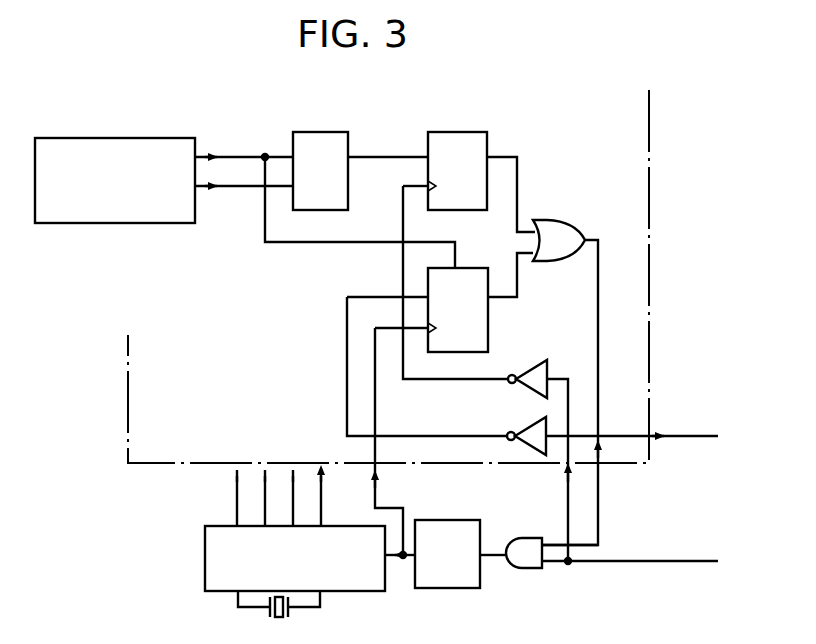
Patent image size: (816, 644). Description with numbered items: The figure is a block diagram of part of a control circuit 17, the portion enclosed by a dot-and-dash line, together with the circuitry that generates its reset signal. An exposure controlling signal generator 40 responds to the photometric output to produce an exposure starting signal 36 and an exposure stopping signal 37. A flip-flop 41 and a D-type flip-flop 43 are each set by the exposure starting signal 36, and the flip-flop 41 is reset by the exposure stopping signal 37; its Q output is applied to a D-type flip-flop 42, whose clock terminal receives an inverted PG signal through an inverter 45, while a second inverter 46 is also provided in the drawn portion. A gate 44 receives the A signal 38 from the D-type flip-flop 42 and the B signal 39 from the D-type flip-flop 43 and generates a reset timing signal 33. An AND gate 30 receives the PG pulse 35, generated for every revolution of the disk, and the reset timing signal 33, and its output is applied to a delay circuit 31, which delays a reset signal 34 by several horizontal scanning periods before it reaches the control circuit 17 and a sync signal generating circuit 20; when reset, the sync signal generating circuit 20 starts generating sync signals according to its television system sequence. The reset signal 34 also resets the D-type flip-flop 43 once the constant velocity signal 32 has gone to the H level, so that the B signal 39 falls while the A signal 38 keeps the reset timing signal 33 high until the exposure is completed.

The control circuit 17 is at (634, 189).
The sync signal generating circuit 20 is at (205, 558).
The AND gate 30 is at (527, 570).
The delay circuit 31 is at (452, 588).
The constant velocity signal 32 is at (691, 438).
The reset timing signal 33 is at (600, 520).
The reset signal 34 is at (380, 494).
The PG pulse 35 is at (652, 563).
The exposure starting signal 36 is at (245, 155).
The exposure stopping signal 37 is at (236, 190).
The A signal 38 is at (500, 155).
The B signal 39 is at (517, 288).
The exposure controlling signal generator 40 is at (170, 138).
The flip-flop 41 is at (313, 132).
The D-type flip-flop 42 is at (459, 132).
The D-type flip-flop 43 is at (488, 330).
The gate 44 is at (548, 222).
The inverter 45 is at (528, 391).
The inverter 46 is at (517, 434).